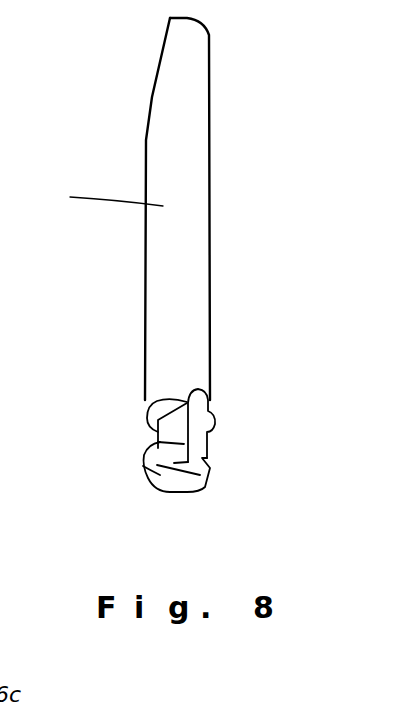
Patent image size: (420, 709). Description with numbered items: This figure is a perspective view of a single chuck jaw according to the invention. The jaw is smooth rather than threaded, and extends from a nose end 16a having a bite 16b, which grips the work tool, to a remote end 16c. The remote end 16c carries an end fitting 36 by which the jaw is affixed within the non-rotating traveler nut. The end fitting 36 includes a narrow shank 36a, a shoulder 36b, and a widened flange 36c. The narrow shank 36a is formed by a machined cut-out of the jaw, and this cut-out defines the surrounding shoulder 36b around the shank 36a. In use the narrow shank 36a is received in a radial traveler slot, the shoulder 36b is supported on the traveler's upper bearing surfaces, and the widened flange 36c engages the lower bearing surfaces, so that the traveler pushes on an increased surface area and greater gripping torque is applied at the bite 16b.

The nose end 16a is at (148, 96).
The bite 16b is at (206, 60).
The remote end 16c is at (212, 378).
The end fitting 36 is at (156, 447).
The narrow shank 36a is at (175, 432).
The shoulder 36b is at (165, 413).
The widened flange 36c is at (168, 477).